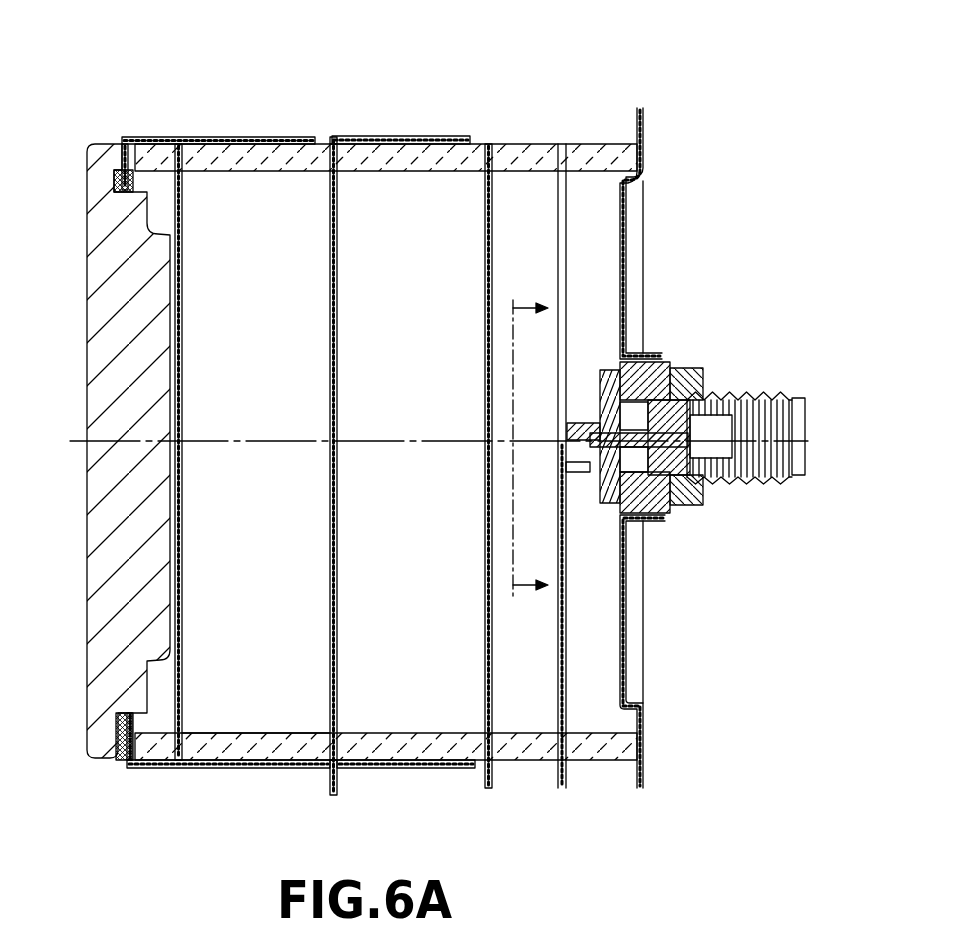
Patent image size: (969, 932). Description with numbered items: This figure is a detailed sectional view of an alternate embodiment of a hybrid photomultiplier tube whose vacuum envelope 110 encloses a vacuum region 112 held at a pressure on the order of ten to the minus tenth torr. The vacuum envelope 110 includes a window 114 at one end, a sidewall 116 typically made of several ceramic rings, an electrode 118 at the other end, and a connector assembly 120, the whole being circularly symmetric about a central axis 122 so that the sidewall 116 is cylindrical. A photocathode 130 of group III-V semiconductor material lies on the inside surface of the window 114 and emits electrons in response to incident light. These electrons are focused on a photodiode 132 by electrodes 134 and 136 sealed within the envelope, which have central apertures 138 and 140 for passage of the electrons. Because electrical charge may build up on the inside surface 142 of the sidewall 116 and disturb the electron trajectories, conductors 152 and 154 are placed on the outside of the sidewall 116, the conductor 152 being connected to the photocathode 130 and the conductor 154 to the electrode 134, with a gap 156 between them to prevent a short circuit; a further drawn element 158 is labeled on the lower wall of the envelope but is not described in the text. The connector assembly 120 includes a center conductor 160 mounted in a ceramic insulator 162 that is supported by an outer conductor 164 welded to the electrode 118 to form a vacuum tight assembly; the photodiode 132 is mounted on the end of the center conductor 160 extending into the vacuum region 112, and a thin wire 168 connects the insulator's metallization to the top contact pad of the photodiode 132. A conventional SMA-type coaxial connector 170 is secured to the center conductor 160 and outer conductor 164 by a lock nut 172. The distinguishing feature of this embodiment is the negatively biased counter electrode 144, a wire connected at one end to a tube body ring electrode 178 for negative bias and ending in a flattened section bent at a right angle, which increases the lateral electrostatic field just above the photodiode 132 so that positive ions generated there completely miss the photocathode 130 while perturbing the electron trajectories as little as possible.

The vacuum envelope 110 is at (370, 72).
The vacuum region 112 is at (421, 389).
The window 114 is at (86, 412).
The sidewall 116 is at (538, 143).
The electrode 118 is at (626, 210).
The connector assembly 120 is at (772, 360).
The central axis 122 is at (430, 444).
The photocathode 130 is at (182, 556).
The photodiode 132 is at (598, 425).
The electrode 134 is at (337, 652).
The electrode 136 is at (493, 672).
The central aperture 138 is at (329, 342).
The central aperture 140 is at (505, 348).
The inside surface 142 is at (283, 733).
The counter electrode 144 is at (564, 612).
The conductor 152 is at (265, 137).
The conductor 154 is at (418, 137).
The gap 156 is at (322, 137).
The bottom wall slab 158 is at (525, 760).
The center conductor 160 is at (600, 410).
The ceramic insulator 162 is at (600, 492).
The outer conductor 164 is at (670, 470).
The thin wire 168 is at (568, 455).
The SMA-type coaxial connector 170 is at (806, 456).
The lock nut 172 is at (704, 498).
The tube body ring electrode 178 is at (563, 143).